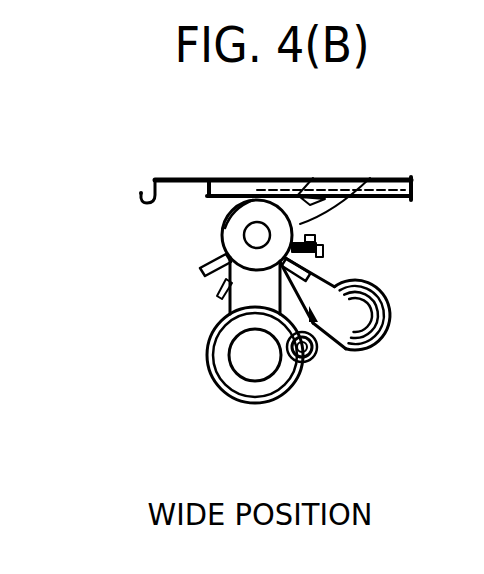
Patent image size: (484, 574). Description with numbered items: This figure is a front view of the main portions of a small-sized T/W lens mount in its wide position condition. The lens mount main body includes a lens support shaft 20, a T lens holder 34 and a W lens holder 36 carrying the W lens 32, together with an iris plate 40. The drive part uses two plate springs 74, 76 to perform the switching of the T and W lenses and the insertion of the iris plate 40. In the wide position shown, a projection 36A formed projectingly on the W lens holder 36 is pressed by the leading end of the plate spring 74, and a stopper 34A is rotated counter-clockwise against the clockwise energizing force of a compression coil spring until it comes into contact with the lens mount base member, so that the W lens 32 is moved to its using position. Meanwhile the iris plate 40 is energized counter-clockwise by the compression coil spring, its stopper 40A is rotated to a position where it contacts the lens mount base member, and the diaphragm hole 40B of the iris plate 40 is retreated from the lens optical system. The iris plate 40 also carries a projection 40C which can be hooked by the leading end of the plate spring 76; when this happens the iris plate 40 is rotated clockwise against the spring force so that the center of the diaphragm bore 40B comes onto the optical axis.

The lens support shaft 20 is at (258, 232).
The W lens 32 is at (247, 373).
The T lens holder 34 is at (387, 333).
The stopper 34A is at (327, 242).
The W lens holder 36 is at (210, 352).
The projection 36A is at (182, 178).
The iris plate 40 is at (332, 267).
The stopper 40A is at (370, 178).
The diaphragm hole 40B is at (312, 360).
The projection 40C is at (313, 178).
The plate spring 74 is at (225, 228).
The plate spring 76 is at (150, 202).